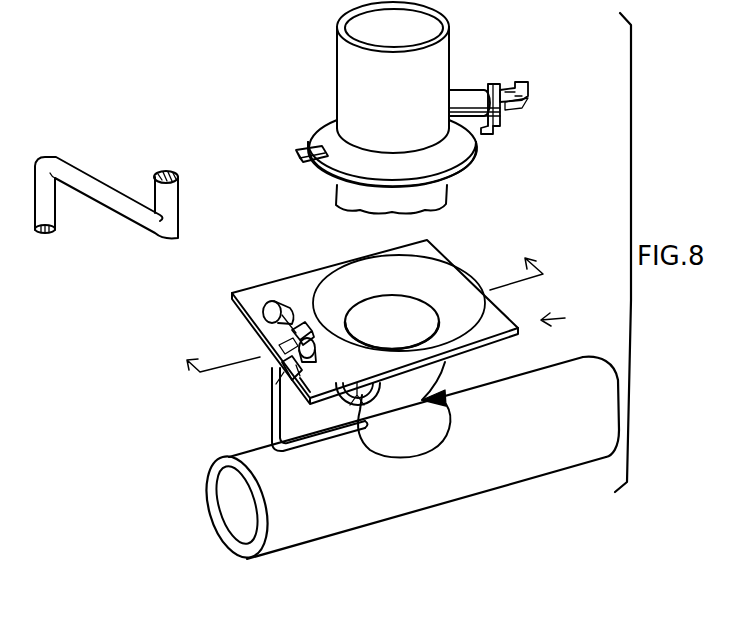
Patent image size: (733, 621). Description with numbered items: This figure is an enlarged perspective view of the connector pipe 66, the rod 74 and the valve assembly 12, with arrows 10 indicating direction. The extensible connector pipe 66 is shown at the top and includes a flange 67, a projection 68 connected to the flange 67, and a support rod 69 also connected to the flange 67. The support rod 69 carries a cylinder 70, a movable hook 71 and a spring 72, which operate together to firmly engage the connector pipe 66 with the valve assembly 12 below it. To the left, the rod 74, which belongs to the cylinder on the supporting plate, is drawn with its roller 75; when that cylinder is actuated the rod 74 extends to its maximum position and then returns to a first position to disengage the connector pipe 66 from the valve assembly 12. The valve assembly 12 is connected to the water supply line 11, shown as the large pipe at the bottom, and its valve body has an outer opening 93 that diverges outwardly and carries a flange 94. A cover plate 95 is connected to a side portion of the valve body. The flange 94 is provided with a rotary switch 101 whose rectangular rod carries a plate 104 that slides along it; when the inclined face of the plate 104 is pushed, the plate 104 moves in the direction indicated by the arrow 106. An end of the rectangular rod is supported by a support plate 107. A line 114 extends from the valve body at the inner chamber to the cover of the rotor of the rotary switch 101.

The direction arrows 10 is at (354, 302).
The water supply line 11 is at (380, 505).
The valve assembly 12 is at (568, 323).
The connector pipe 66 is at (345, 70).
The flange 67 is at (460, 150).
The projection 68 is at (300, 160).
The support rod 69 is at (520, 108).
The cylinder 70 is at (459, 98).
The movable hook 71 is at (497, 85).
The spring 72 is at (503, 86).
The rod 74 is at (118, 217).
The roller 75 is at (52, 233).
The outer opening 93 is at (412, 318).
The flange 94 is at (283, 290).
The cover plate 95 is at (345, 405).
The rotary switch 101 is at (265, 305).
The plate 104 is at (300, 324).
The arrow 106 is at (287, 373).
The support plate 107 is at (316, 360).
The line 114 is at (271, 432).